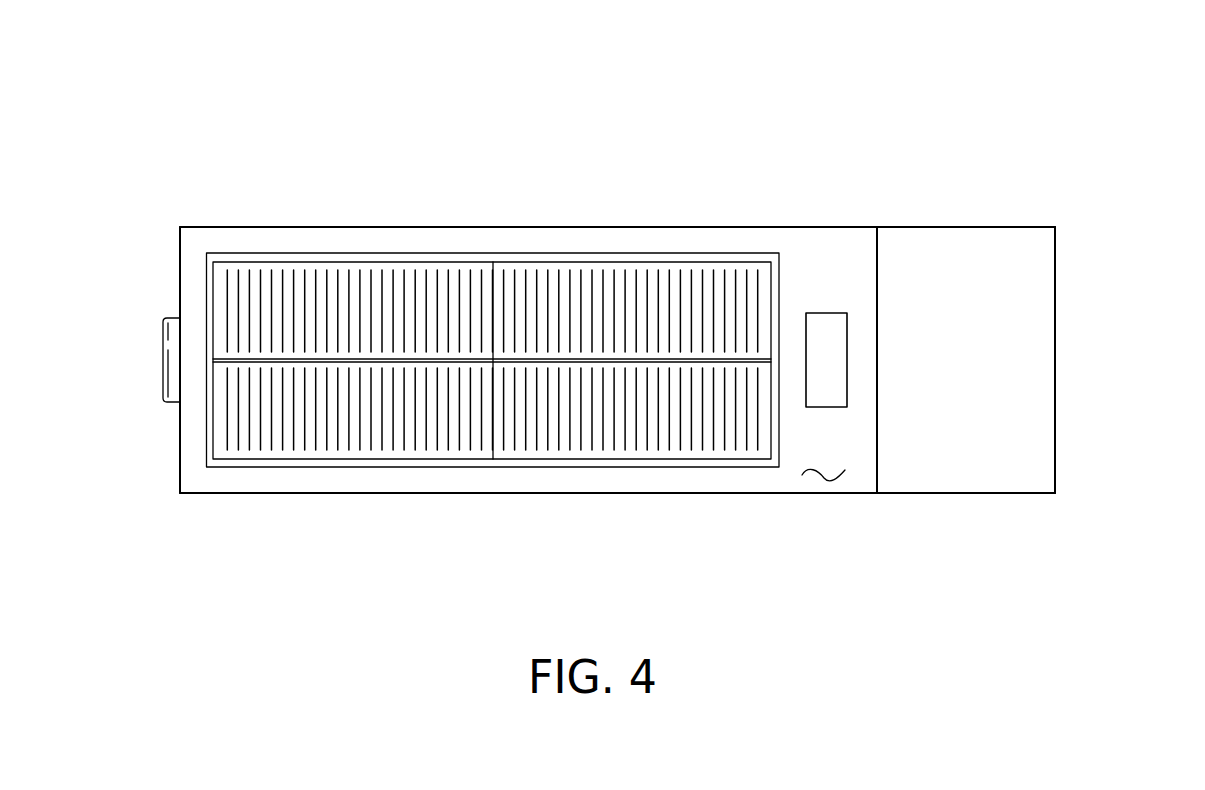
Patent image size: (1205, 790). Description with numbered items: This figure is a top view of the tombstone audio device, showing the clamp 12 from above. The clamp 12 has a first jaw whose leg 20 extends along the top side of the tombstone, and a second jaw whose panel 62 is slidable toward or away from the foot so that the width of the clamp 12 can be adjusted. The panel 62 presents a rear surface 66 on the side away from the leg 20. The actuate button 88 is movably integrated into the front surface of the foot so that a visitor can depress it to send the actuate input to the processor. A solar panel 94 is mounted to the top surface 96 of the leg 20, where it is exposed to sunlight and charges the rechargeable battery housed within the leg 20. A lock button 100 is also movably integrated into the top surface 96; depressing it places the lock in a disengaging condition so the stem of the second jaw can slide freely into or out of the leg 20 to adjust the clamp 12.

The clamp 12 is at (685, 153).
The leg 20 is at (545, 227).
The panel 62 is at (1055, 227).
The rear surface 66 is at (1055, 417).
The actuate button 88 is at (163, 358).
The solar panel 94 is at (493, 467).
The top surface 96 is at (820, 478).
The lock button 100 is at (825, 313).